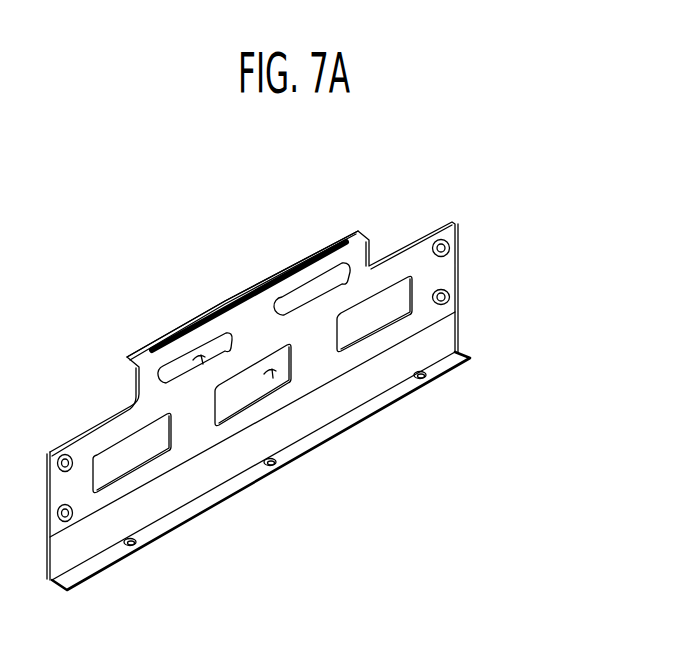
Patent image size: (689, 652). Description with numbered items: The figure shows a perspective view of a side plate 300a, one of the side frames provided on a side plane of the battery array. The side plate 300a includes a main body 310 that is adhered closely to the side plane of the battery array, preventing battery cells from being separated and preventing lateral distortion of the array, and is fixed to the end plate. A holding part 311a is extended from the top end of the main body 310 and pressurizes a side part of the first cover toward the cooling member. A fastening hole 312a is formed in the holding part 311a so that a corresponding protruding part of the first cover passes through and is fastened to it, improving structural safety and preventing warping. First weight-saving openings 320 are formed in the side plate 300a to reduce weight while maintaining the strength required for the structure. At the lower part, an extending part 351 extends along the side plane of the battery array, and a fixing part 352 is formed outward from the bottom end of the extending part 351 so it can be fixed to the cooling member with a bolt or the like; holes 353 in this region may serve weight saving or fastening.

The side plate 300a is at (458, 269).
The main body 310 is at (442, 267).
The holding part 311a is at (350, 228).
The fastening hole 312a is at (203, 316).
The first weight-saving opening 320 is at (203, 365).
The extending part 351 is at (445, 328).
The fixing part 352 is at (458, 350).
The fastening hole 353 is at (430, 366).